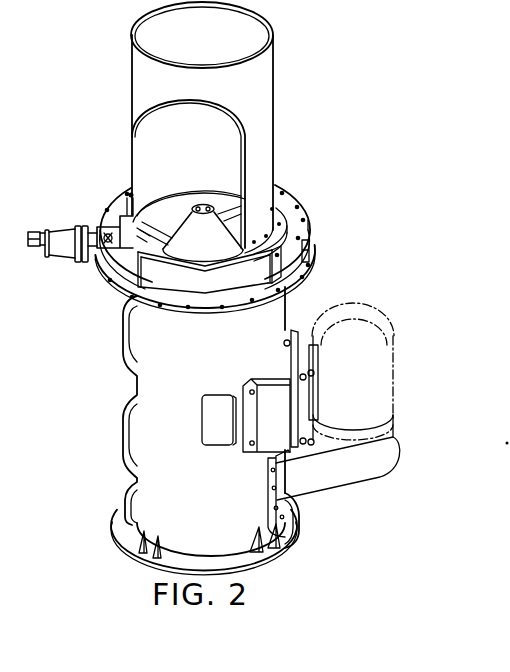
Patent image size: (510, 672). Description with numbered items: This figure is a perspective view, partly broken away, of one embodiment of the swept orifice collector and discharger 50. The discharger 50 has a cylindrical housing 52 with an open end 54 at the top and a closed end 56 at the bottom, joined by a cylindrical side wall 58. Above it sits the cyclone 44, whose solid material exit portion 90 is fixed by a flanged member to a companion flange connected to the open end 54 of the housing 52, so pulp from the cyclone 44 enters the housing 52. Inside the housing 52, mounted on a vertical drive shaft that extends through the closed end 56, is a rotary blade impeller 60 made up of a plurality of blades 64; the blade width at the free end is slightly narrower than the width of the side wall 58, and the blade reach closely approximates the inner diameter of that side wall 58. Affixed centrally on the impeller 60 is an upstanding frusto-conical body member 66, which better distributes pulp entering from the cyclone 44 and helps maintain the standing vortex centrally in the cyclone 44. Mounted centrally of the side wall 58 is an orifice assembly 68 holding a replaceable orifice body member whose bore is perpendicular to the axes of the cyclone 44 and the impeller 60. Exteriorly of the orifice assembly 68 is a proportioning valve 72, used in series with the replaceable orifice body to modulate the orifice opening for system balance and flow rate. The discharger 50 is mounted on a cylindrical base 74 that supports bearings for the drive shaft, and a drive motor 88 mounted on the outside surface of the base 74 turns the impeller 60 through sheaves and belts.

The cyclone 44 is at (276, 128).
The swept orifice collector and discharger 50 is at (118, 340).
The cylindrical housing 52 is at (314, 222).
The open end 54 is at (148, 235).
The closed end 56 is at (111, 291).
The cylindrical side wall 58 is at (309, 260).
The rotary blade impeller 60 is at (201, 282).
The blade 64 is at (138, 264).
The upstanding frusto-conical body member 66 is at (183, 210).
The orifice assembly 68 is at (96, 230).
The proportioning valve 72 is at (64, 264).
The cylindrical base 74 is at (136, 391).
The drive motor 88 is at (394, 355).
The solid material exit portion 90 is at (133, 195).